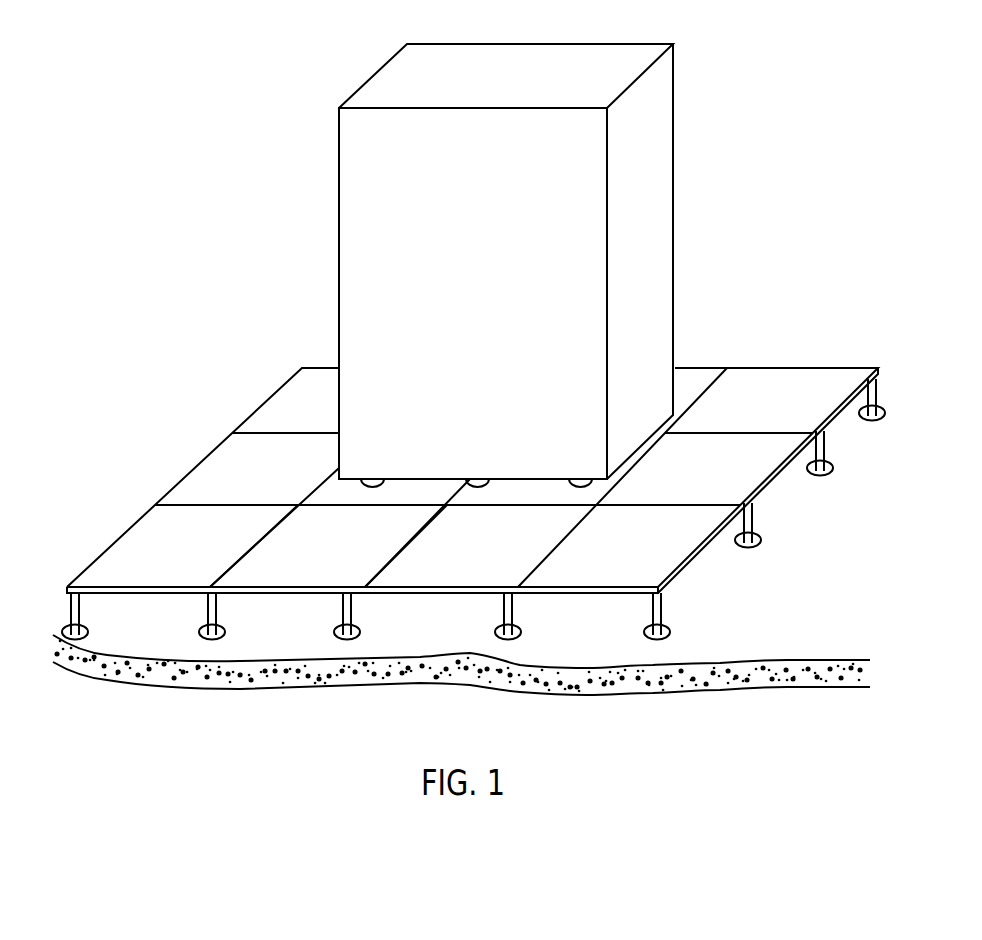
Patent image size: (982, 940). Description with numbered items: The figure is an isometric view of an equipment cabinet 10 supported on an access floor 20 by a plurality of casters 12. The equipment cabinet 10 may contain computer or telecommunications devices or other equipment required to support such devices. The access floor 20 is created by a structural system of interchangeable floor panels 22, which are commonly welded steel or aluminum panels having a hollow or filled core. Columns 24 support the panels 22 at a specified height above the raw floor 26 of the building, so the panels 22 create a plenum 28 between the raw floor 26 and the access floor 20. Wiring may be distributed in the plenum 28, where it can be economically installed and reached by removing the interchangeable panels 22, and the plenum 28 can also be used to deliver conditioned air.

The equipment cabinet 10 is at (331, 119).
The casters 12 is at (368, 479).
The access floor 20 is at (223, 430).
The floor panels 22 is at (312, 570).
The columns 24 is at (353, 637).
The raw floor 26 is at (463, 673).
The plenum 28 is at (573, 640).